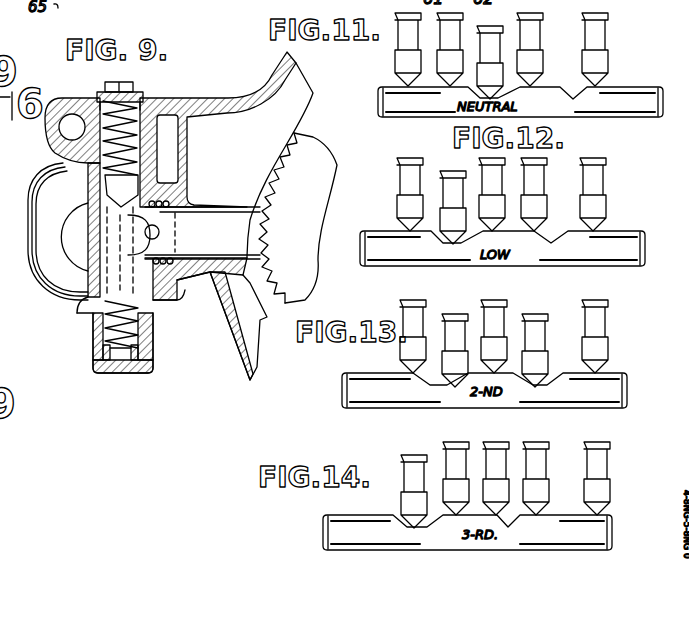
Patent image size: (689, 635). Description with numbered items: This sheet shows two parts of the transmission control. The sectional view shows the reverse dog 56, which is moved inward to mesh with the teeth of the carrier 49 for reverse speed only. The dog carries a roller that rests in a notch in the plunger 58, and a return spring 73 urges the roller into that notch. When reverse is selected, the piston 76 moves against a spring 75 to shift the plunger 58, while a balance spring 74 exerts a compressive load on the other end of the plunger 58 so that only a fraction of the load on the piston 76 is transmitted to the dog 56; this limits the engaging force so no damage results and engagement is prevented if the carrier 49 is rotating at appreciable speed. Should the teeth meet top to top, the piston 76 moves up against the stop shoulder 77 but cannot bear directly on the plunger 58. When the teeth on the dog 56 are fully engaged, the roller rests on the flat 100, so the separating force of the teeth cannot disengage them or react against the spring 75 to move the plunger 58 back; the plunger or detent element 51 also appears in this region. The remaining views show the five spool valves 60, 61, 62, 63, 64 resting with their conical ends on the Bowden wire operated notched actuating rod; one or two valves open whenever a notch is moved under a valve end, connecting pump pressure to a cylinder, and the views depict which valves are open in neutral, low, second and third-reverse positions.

In FIG. 9, the carrier 49 is at (298, 218).
In FIG. 9, the detent plunger 51 is at (133, 250).
In FIG. 9, the reverse dog 56 is at (187, 238).
In FIG. 9, the plunger 58 is at (113, 232).
In FIG. 9, the return spring 73 is at (172, 205).
In FIG. 9, the balance spring 74 is at (140, 98).
In FIG. 9, the spring 75 is at (122, 332).
In FIG. 9, the piston 76 is at (107, 348).
In FIG. 9, the stop shoulder 77 is at (106, 309).
In FIG. 9, the flat 100 is at (208, 284).
In FIG. 11, the spool valve 60 is at (405, 62).
In FIG. 12, the spool valve 60 is at (407, 185).
In FIG. 13, the spool valve 60 is at (413, 352).
In FIG. 14, the spool valve 60 is at (417, 503).
In FIG. 11, the spool valve 61 is at (447, 60).
In FIG. 12, the spool valve 61 is at (448, 217).
In FIG. 13, the spool valve 61 is at (457, 325).
In FIG. 14, the spool valve 61 is at (453, 488).
In FIG. 11, the spool valve 62 is at (493, 72).
In FIG. 12, the spool valve 62 is at (493, 205).
In FIG. 13, the spool valve 62 is at (493, 355).
In FIG. 14, the spool valve 62 is at (500, 483).
In FIG. 11, the spool valve 63 is at (543, 63).
In FIG. 12, the spool valve 63 is at (535, 208).
In FIG. 13, the spool valve 63 is at (540, 360).
In FIG. 14, the spool valve 63 is at (542, 490).
In FIG. 11, the spool valve 64 is at (592, 62).
In FIG. 12, the spool valve 64 is at (593, 205).
In FIG. 13, the spool valve 64 is at (595, 348).
In FIG. 14, the spool valve 64 is at (595, 488).